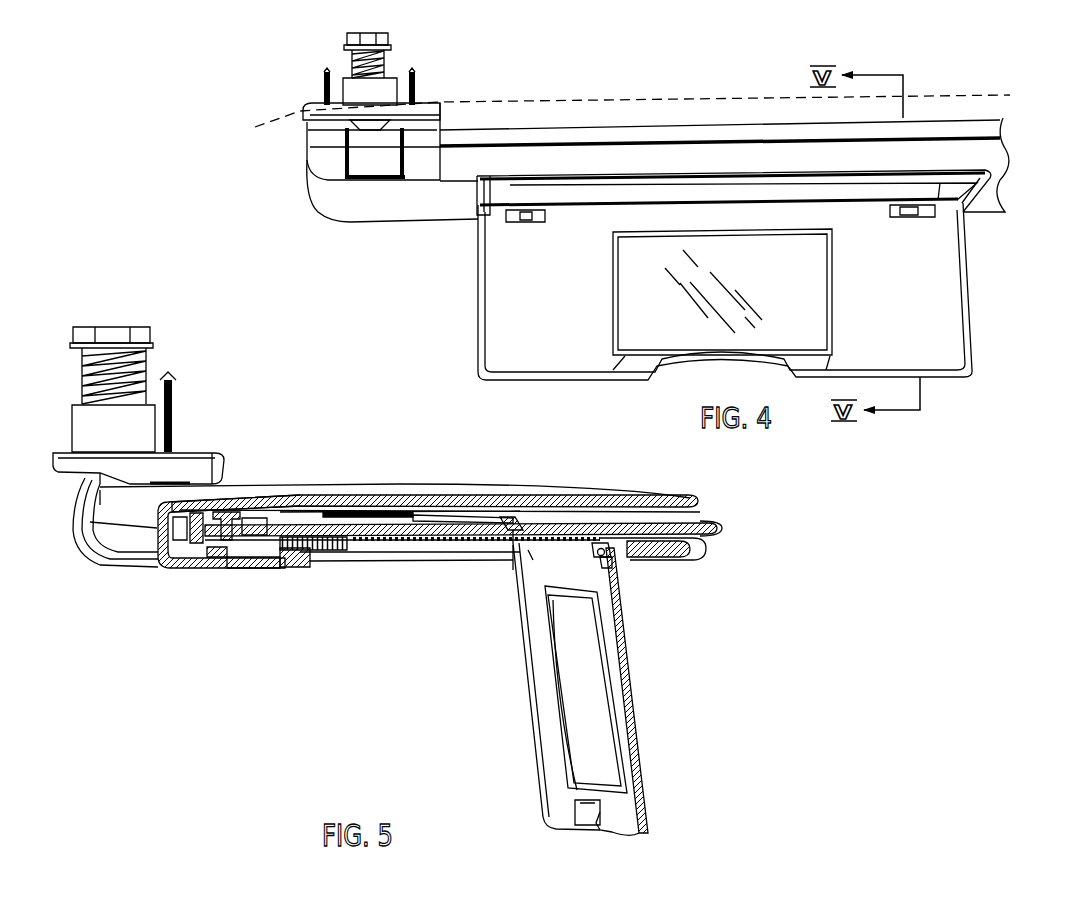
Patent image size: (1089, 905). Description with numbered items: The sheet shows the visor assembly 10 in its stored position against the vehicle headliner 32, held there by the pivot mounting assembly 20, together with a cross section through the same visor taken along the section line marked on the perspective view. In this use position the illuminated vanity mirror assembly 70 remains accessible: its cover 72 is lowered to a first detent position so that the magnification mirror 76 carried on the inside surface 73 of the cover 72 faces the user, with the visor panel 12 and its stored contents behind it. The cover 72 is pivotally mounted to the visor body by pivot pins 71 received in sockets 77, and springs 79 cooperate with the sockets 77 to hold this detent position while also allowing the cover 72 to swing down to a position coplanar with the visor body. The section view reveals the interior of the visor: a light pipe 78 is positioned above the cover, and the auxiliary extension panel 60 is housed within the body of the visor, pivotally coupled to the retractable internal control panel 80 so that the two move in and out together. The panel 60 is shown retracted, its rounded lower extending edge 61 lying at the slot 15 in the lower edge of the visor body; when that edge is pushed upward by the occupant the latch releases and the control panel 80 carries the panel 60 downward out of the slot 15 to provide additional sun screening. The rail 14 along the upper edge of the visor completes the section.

In FIG. 4, the visor assembly 10 is at (372, 250).
In FIG. 5, the visor assembly 10 is at (177, 655).
In FIG. 4, the visor panel 12 is at (451, 211).
In FIG. 5, the visor panel 12 is at (140, 558).
In FIG. 4, the rail 14 is at (488, 130).
In FIG. 5, the rail 14 is at (343, 488).
In FIG. 5, the slot 15 is at (693, 536).
In FIG. 4, the pivot mounting assembly 20 is at (298, 150).
In FIG. 5, the pivot mounting assembly 20 is at (208, 396).
In FIG. 4, the vehicle headliner 32 is at (640, 100).
In FIG. 5, the auxiliary extension panel 60 is at (642, 512).
In FIG. 5, the lower extending edge 61 is at (717, 521).
In FIG. 5, the illuminated vanity mirror assembly 70 is at (498, 662).
In FIG. 4, the pivot pins 71 is at (545, 224).
In FIG. 5, the pivot pins 71 is at (622, 598).
In FIG. 4, the cover 72 is at (980, 318).
In FIG. 5, the cover 72 is at (650, 716).
In FIG. 4, the inside surface 73 is at (901, 334).
In FIG. 4, the magnification mirror 76 is at (794, 291).
In FIG. 5, the magnification mirror 76 is at (580, 712).
In FIG. 5, the sockets 77 is at (595, 555).
In FIG. 5, the light pipe 78 is at (298, 569).
In FIG. 5, the springs 79 is at (637, 558).
In FIG. 5, the control panel 80 is at (413, 541).